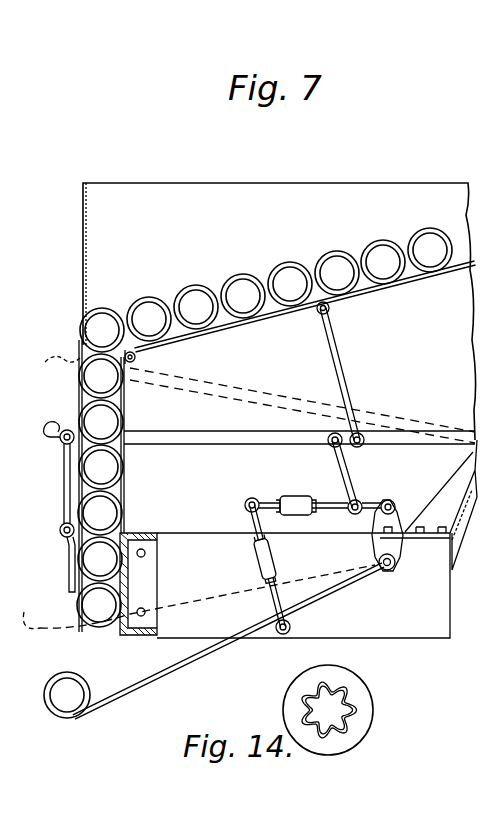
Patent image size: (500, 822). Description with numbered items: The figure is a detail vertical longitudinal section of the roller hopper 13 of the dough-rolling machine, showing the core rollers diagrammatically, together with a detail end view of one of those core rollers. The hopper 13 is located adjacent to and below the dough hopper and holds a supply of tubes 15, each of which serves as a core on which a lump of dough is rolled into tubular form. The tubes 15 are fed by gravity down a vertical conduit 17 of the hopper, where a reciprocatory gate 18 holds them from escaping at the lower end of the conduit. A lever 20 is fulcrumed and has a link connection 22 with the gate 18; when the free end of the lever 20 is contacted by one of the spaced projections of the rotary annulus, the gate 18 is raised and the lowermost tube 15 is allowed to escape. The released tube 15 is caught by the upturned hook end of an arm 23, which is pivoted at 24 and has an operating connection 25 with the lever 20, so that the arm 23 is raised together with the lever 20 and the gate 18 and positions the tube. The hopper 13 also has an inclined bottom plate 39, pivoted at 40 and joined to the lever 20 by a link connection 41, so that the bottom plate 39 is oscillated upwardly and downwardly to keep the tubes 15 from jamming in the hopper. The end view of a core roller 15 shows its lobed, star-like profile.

In FIG. 7, the hopper 13 is at (250, 190).
In FIG. 7, the tubes 15 is at (245, 278).
In FIG. 14, the tubes 15 is at (360, 706).
In FIG. 7, the vertical conduit 17 is at (79, 400).
In FIG. 7, the reciprocatory gate 18 is at (68, 568).
In FIG. 7, the lever 20 is at (48, 436).
In FIG. 7, the link connection 22 is at (63, 490).
In FIG. 7, the arm 23 is at (197, 658).
In FIG. 7, the pivot 24 is at (250, 539).
In FIG. 7, the operating connection 25 is at (262, 510).
In FIG. 7, the inclined bottom plate 39 is at (277, 317).
In FIG. 7, the pivot 40 is at (137, 358).
In FIG. 7, the link connection 41 is at (342, 370).